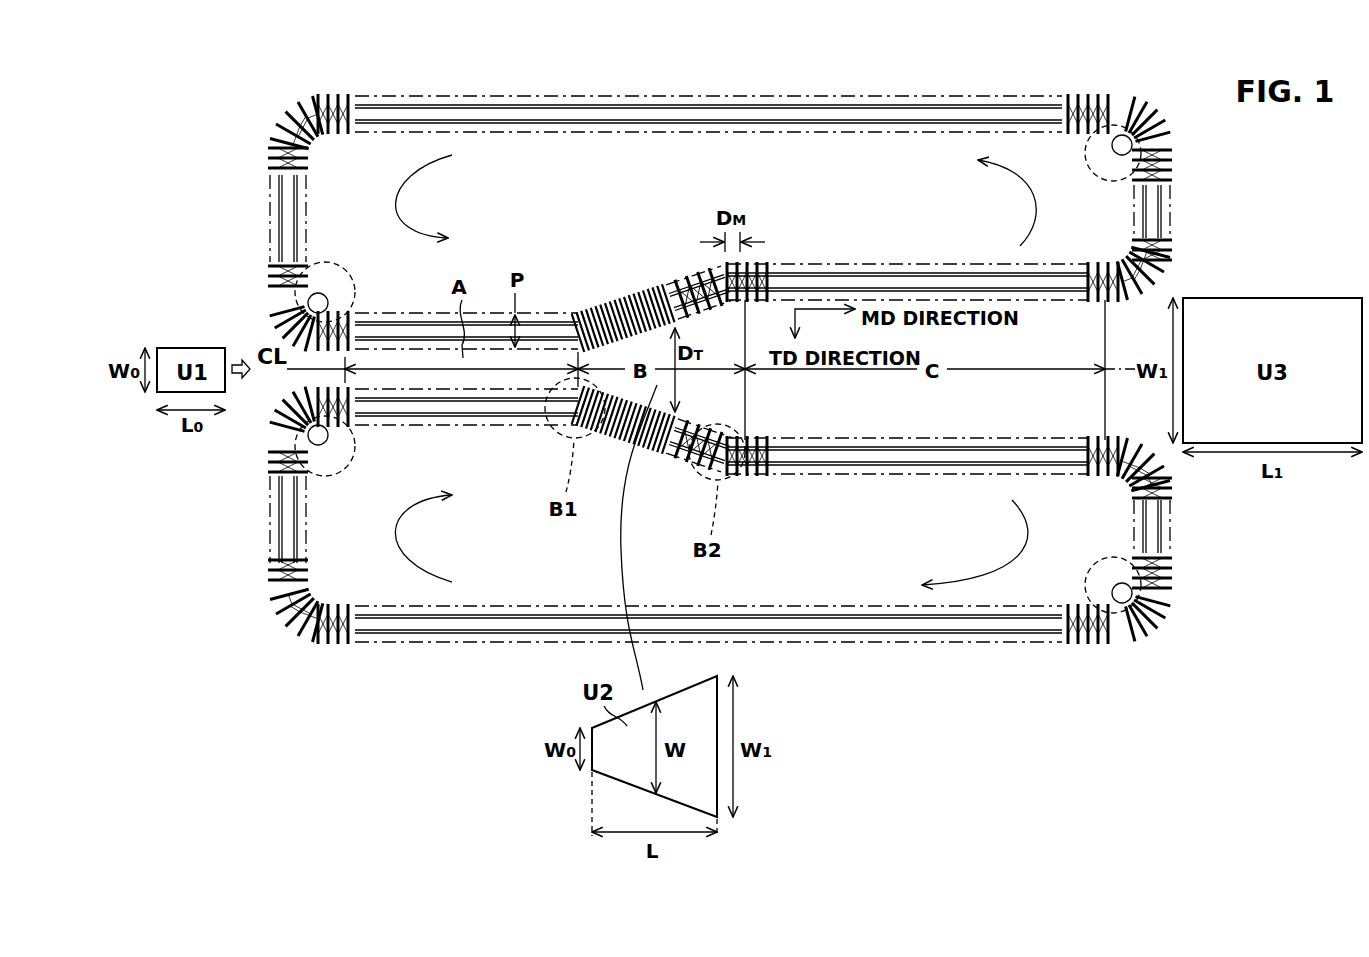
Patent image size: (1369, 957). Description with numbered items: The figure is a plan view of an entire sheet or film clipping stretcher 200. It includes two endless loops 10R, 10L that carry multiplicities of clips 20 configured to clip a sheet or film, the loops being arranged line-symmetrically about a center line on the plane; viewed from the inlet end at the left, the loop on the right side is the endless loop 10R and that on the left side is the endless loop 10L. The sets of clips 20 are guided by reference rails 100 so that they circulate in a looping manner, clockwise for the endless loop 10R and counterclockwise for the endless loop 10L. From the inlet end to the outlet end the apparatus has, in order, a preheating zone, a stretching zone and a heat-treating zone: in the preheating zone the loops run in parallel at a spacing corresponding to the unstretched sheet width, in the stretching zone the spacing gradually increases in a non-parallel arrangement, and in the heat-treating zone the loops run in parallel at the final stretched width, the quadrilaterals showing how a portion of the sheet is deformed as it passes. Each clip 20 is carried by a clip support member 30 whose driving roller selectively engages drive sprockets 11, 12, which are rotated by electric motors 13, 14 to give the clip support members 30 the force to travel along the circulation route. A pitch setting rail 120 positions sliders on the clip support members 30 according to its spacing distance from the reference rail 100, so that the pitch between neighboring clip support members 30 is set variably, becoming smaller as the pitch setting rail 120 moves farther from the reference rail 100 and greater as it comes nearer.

The sheet or film clipping stretcher 200 is at (262, 100).
The endless loop 10L is at (880, 90).
The endless loop 10R is at (838, 656).
The drive sprocket 11 is at (350, 297).
The drive sprocket 12 is at (1106, 150).
The electric motor 13 is at (341, 268).
The electric motor 14 is at (1104, 188).
The clip 20 is at (733, 304).
The clip support member 30 is at (678, 274).
The reference rail 100 is at (1045, 298).
The pitch setting rail 120 is at (895, 268).